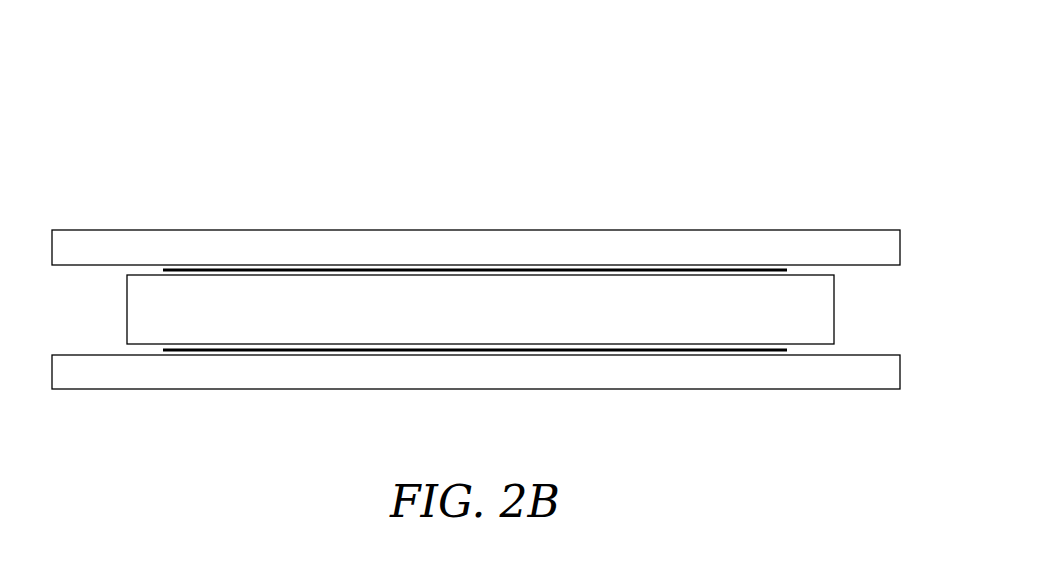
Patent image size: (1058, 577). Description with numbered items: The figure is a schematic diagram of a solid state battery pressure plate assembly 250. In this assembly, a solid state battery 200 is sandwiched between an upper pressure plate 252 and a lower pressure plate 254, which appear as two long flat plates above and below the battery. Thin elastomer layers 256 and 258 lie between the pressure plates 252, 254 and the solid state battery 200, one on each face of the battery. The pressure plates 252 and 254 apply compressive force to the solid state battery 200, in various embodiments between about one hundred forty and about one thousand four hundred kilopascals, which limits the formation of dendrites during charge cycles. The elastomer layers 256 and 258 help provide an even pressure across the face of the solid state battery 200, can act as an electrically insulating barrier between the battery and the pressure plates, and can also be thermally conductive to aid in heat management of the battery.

The solid state battery pressure plate assembly 250 is at (660, 188).
The pressure plate 252 is at (900, 241).
The pressure plate 254 is at (900, 365).
The solid state battery 200 is at (834, 306).
The elastomer layer 256 is at (662, 268).
The elastomer layer 258 is at (705, 350).